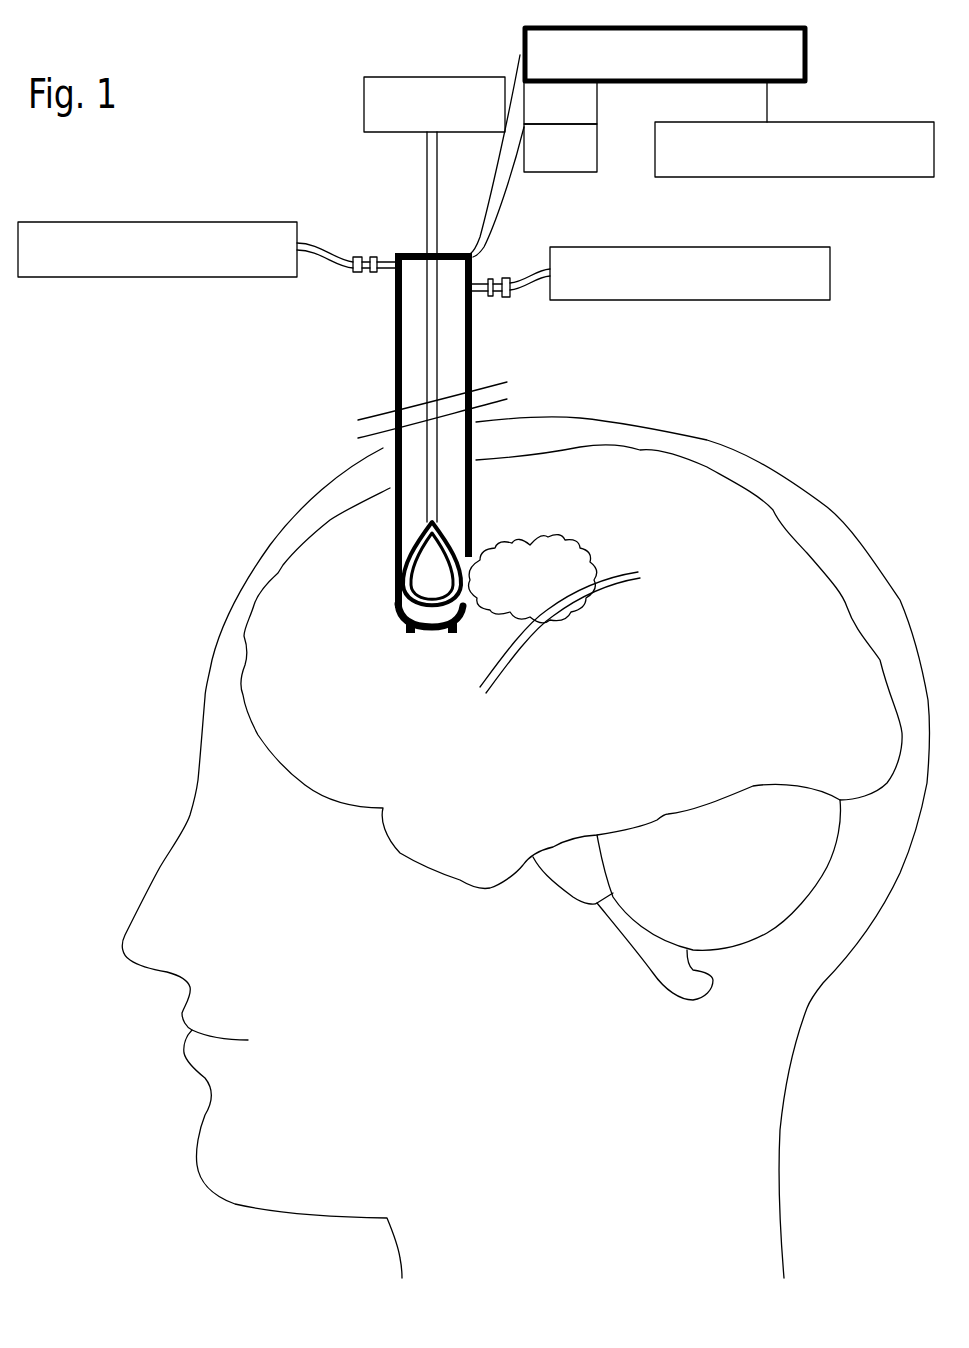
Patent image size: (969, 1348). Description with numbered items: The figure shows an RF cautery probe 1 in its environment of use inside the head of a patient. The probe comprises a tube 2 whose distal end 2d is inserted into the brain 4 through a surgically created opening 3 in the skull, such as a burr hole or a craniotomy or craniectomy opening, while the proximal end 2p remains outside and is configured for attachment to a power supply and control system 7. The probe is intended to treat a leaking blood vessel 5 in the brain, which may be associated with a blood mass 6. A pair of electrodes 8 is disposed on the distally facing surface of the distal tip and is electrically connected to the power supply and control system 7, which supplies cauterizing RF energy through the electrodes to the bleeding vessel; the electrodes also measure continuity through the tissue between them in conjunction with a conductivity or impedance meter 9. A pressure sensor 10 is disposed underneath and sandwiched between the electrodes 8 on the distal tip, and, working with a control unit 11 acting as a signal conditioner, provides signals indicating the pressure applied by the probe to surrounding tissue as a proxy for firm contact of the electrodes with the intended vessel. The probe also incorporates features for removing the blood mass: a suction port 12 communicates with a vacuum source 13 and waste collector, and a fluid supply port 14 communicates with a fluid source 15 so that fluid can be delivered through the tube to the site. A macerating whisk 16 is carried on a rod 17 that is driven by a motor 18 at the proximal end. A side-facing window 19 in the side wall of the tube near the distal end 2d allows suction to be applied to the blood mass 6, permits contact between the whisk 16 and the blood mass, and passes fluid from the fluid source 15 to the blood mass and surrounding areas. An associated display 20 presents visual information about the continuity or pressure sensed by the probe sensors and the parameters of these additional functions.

The cautery probe 1 is at (476, 354).
The tube 2 is at (392, 513).
The proximal end 2p is at (378, 228).
The distal end 2d is at (389, 640).
The craniotomy or craniectomy opening 3 is at (477, 422).
The brain 4 is at (640, 450).
The blood vessel 5 is at (513, 660).
The blood mass 6 is at (533, 579).
The power supply and control system 7 is at (807, 29).
The electrodes 8 is at (407, 624).
The conductivity or impedance meter 9 is at (597, 113).
The pressure sensor 10 is at (427, 632).
The control unit 11 is at (597, 150).
The suction port 12 is at (520, 297).
The vacuum source 13 is at (640, 247).
The fluid supply port 14 is at (362, 292).
The fluid source 15 is at (163, 222).
The whisk 16 is at (475, 518).
The rod 17 is at (440, 363).
The motor 18 is at (378, 77).
The side-facing window 19 is at (478, 607).
The display 20 is at (867, 122).